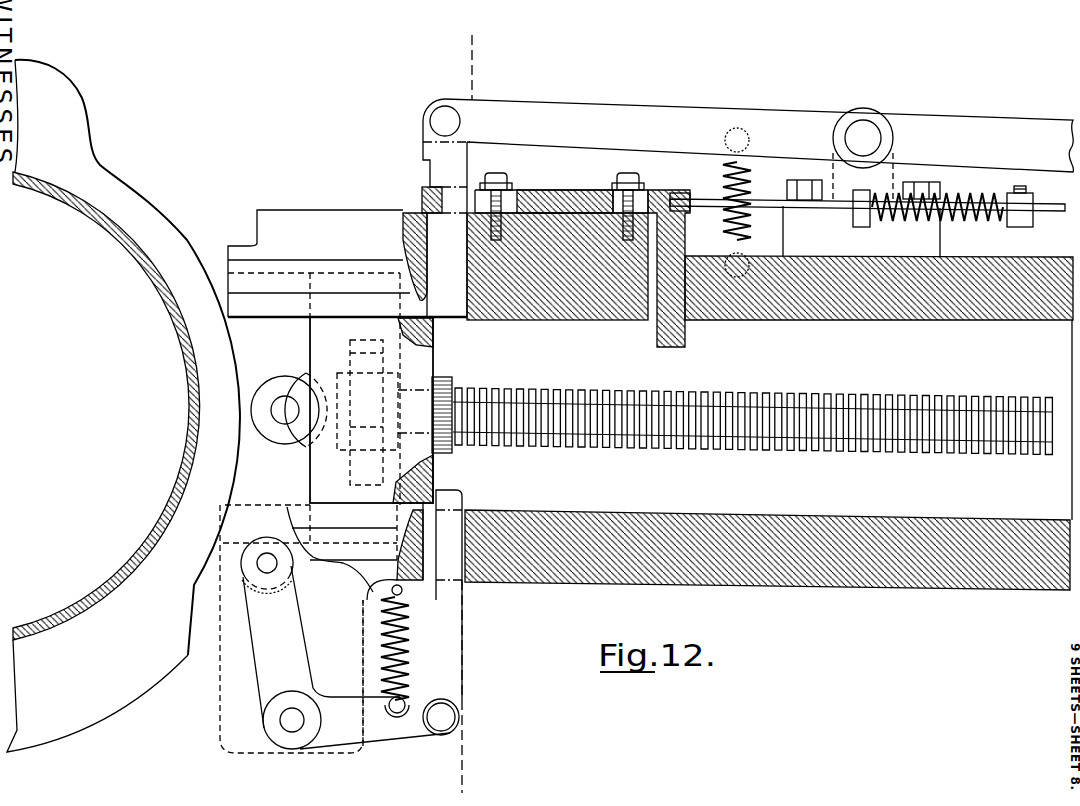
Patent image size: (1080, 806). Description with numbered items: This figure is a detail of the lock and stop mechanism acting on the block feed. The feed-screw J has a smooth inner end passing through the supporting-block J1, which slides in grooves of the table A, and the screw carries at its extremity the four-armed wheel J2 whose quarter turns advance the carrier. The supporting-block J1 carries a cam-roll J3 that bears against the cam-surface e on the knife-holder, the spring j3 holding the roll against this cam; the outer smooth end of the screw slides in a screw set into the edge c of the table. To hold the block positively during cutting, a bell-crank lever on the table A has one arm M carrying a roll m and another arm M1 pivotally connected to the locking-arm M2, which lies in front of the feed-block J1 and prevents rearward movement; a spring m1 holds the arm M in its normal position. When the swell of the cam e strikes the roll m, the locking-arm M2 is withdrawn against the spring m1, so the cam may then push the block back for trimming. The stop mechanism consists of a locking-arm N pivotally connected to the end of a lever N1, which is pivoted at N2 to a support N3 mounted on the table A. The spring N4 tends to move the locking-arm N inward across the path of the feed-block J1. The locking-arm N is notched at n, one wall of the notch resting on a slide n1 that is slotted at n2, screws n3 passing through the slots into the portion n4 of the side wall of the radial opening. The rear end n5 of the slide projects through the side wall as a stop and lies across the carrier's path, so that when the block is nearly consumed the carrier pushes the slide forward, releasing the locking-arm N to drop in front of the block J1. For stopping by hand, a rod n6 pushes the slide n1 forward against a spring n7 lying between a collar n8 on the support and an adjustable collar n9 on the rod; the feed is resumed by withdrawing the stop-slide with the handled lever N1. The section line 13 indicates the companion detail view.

The cam-surface e is at (123, 406).
The edge of the table c is at (343, 481).
The feed-screw J is at (513, 388).
The supporting-block J1 is at (404, 373).
The four-armed wheel J2 is at (352, 347).
The cam-roll J3 is at (275, 364).
The spring j3 is at (271, 394).
The locking-arm N is at (427, 268).
The lever N1 is at (547, 112).
The pivot N2 is at (862, 130).
The support N3 is at (810, 230).
The spring N4 is at (702, 190).
The notch n is at (418, 186).
The slide n1 is at (561, 188).
The slot n2 is at (507, 200).
The screw n3 is at (493, 172).
The portion of the side wall n4 is at (613, 272).
The rear end of the slide n5 is at (686, 342).
The rod n6 is at (1047, 219).
The spring n7 is at (960, 196).
The collar n8 is at (864, 227).
The adjustable collar n9 is at (1019, 227).
The arm of bell-crank lever M is at (257, 648).
The roll m is at (261, 545).
The arm of bell-crank lever M1 is at (308, 720).
The spring m1 is at (380, 634).
The locking-arm M2 is at (443, 638).
The table A is at (358, 757).
The section line 13 is at (481, 405).